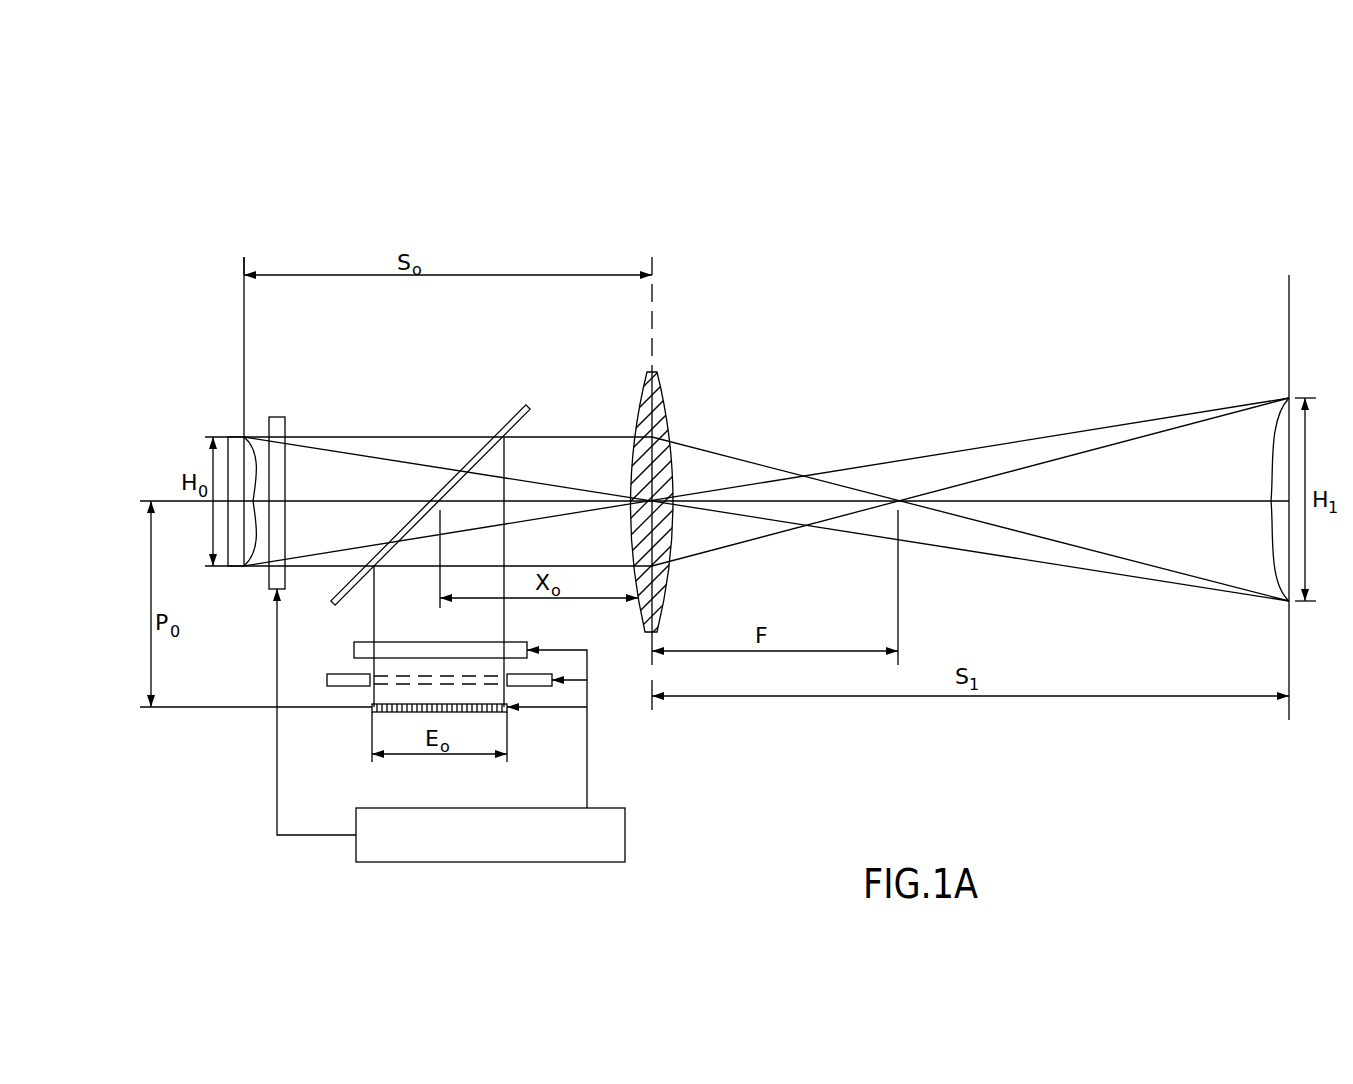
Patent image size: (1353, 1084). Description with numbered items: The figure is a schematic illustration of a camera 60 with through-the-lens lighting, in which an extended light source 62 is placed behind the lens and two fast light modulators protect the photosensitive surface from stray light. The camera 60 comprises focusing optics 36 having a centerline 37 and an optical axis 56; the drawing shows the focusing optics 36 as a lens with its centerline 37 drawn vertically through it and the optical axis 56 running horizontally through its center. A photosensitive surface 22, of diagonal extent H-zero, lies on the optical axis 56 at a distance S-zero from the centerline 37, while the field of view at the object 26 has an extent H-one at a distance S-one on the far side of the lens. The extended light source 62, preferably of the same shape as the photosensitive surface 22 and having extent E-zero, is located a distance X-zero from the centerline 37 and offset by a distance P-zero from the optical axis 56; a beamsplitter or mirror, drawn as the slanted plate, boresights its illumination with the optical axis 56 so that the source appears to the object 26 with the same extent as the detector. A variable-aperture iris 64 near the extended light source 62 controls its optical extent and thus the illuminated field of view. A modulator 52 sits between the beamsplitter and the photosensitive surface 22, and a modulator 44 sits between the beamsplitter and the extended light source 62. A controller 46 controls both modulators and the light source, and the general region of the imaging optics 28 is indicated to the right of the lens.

The camera 60 is at (290, 228).
The imaging optics 28 is at (818, 278).
The photosensitive surface 22 is at (237, 437).
The modulator 52 is at (277, 424).
The focusing optics 36 is at (664, 402).
The centerline 37 is at (668, 464).
The optical axis 56 is at (1055, 497).
The object 26 is at (1273, 432).
The modulator 44 is at (353, 651).
The variable-aperture iris 64 is at (327, 681).
The extended light source 62 is at (372, 708).
The controller 46 is at (625, 840).